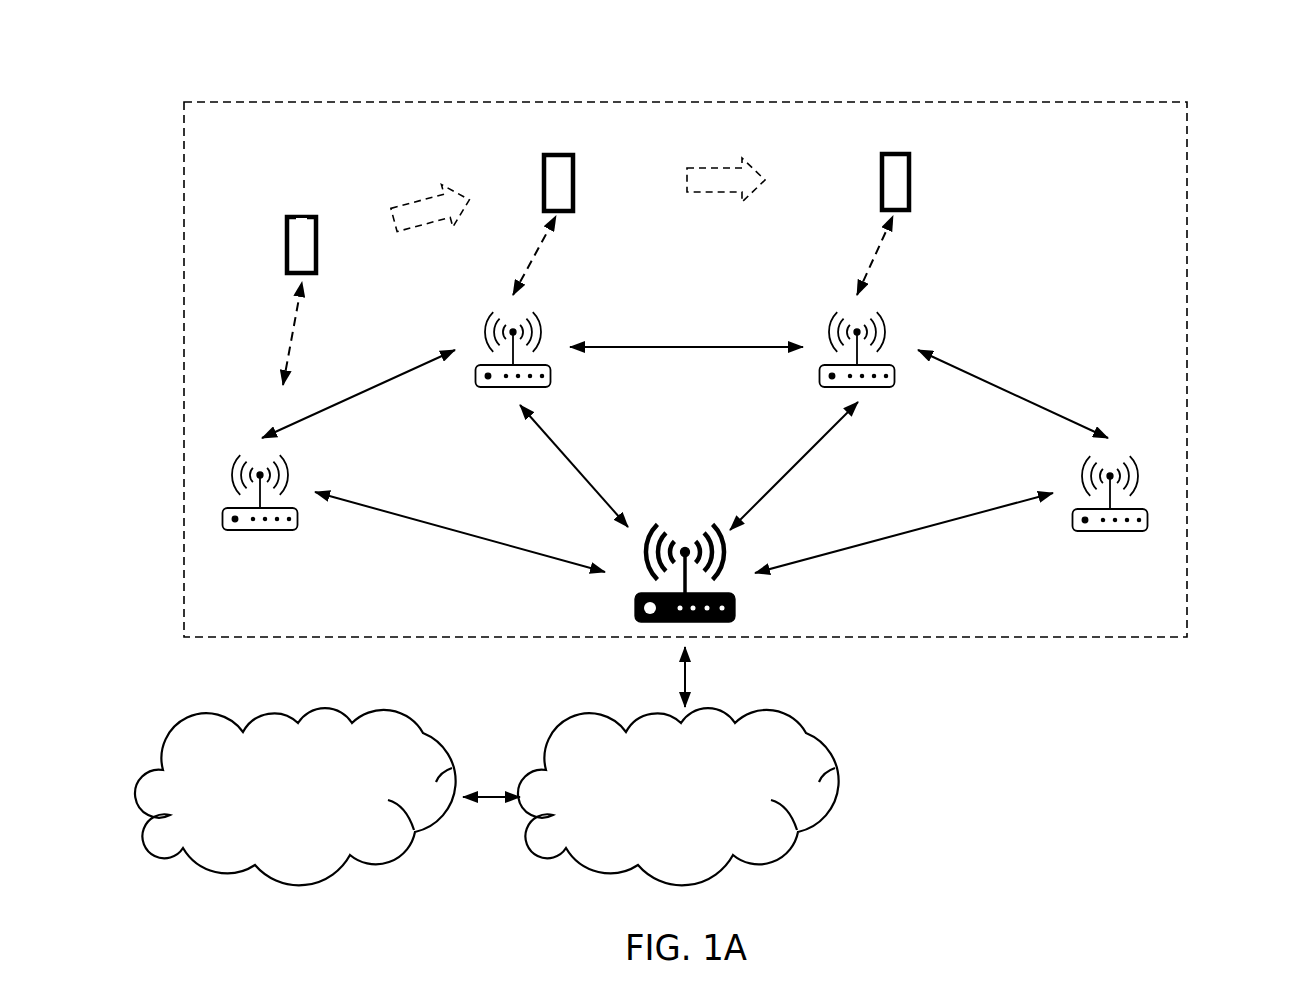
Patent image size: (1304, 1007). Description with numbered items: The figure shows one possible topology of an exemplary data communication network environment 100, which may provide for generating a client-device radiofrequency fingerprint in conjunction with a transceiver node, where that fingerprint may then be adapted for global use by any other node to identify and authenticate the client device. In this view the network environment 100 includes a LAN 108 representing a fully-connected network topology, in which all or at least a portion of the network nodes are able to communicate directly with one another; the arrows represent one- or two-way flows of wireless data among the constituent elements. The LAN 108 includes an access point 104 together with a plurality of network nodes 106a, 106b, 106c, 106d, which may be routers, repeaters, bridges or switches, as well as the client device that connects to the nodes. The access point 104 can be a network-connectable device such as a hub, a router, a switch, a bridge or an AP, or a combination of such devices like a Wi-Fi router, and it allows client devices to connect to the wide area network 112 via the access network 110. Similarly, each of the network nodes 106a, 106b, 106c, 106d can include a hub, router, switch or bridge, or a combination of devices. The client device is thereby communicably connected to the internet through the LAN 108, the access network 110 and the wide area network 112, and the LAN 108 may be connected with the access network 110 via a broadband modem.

The data communication network environment 100 is at (1212, 80).
The access point (AP) 104 is at (635, 613).
The network node 106a is at (250, 450).
The network node 106b is at (488, 322).
The network node 106c is at (828, 319).
The network node 106d is at (1115, 448).
The LAN 108 is at (312, 149).
The access network 110 is at (625, 772).
The wide area network 112 is at (238, 769).